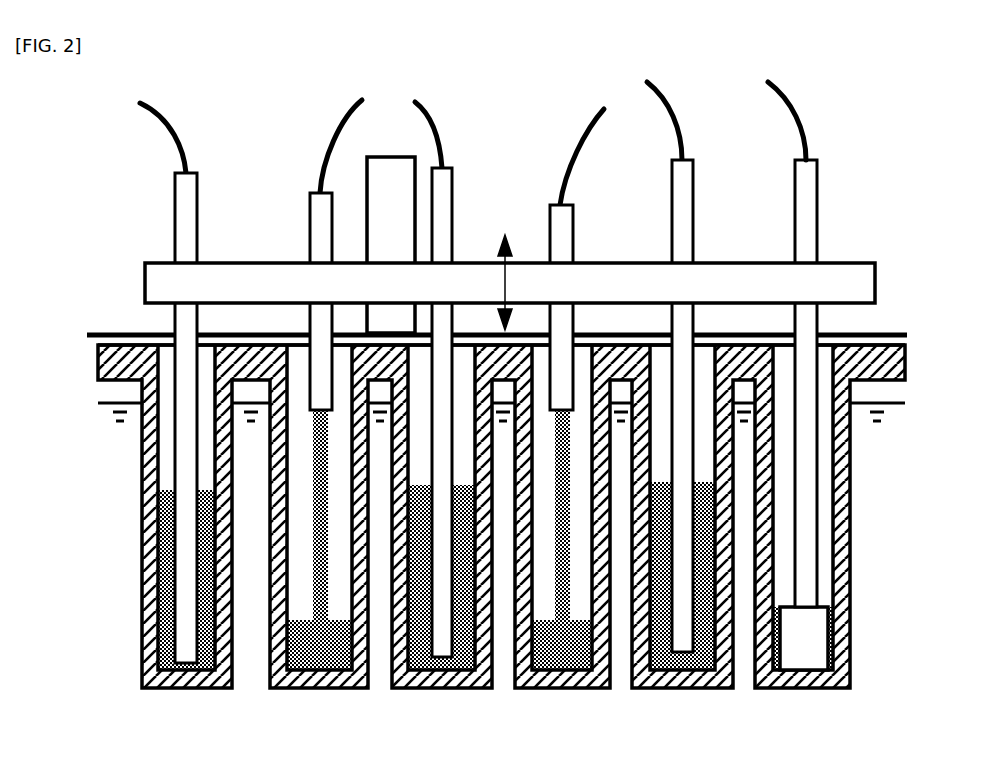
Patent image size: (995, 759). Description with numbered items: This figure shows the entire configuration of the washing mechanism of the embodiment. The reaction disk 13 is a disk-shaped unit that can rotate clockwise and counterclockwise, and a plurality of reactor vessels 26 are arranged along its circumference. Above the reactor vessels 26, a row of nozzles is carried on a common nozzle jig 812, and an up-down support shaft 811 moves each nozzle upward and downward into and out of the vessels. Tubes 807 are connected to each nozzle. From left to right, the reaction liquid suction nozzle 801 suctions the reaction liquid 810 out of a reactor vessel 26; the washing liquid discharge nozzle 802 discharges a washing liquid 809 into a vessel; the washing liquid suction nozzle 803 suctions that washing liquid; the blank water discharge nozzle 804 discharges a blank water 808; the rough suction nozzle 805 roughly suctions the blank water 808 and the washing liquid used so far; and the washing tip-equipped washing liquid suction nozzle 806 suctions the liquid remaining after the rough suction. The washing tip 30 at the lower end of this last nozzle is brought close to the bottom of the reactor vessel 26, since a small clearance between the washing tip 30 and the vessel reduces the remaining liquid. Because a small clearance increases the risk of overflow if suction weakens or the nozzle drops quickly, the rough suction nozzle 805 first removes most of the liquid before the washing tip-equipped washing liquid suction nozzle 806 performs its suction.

The reaction disk 13 is at (87, 335).
The reactor vessel 26 is at (113, 355).
The washing tip 30 is at (800, 648).
The reaction liquid suction nozzle 801 is at (183, 192).
The washing liquid discharge nozzle 802 is at (312, 222).
The washing liquid suction nozzle 803 is at (450, 198).
The blank water discharge nozzle 804 is at (565, 225).
The rough suction nozzle 805 is at (686, 228).
The washing tip-equipped washing liquid suction nozzle 806 is at (808, 228).
The tube 807 is at (800, 112).
The blank water 808 is at (765, 660).
The washing liquid 809 is at (317, 577).
The reaction liquid 810 is at (147, 505).
The up-down support shaft 811 is at (382, 188).
The nozzle jig 812 is at (145, 281).